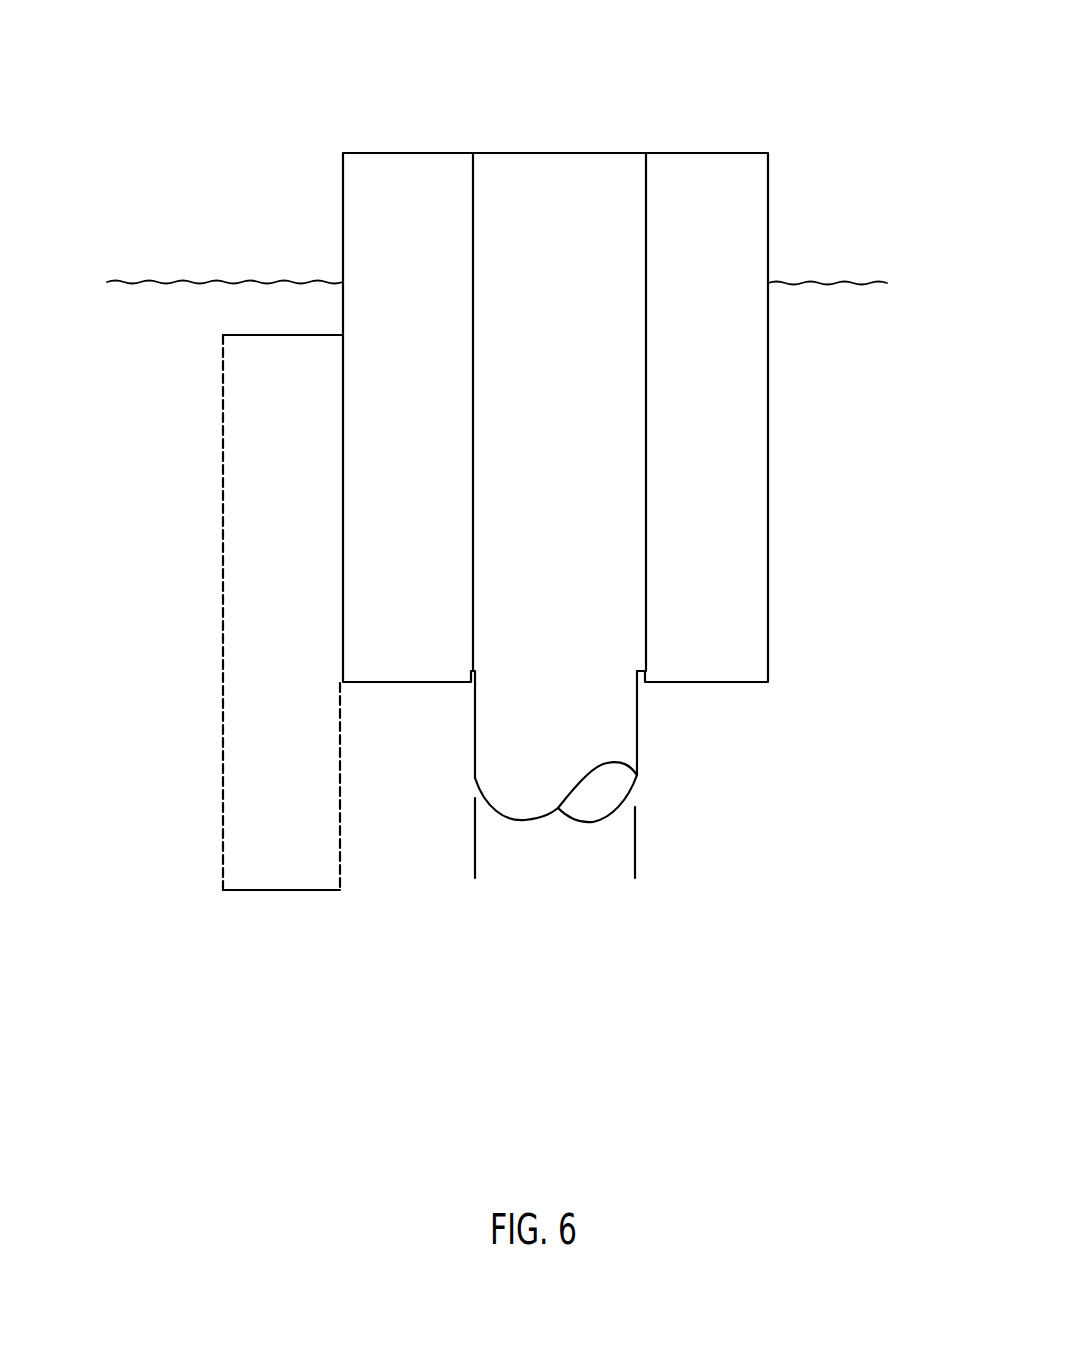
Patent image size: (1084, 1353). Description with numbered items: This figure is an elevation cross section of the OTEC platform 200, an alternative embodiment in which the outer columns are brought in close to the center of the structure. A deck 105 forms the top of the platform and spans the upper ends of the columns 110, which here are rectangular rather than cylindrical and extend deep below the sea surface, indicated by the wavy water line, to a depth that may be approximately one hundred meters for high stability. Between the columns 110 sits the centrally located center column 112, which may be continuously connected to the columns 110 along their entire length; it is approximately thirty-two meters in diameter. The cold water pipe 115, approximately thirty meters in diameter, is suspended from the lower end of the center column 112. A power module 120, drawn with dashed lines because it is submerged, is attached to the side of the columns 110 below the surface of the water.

The OTEC platform 200 is at (682, 86).
The deck 105 is at (366, 150).
The center column 112 is at (474, 182).
The columns 110 is at (342, 232).
The cold water pipe 115 is at (638, 734).
The power modules 120 is at (222, 542).